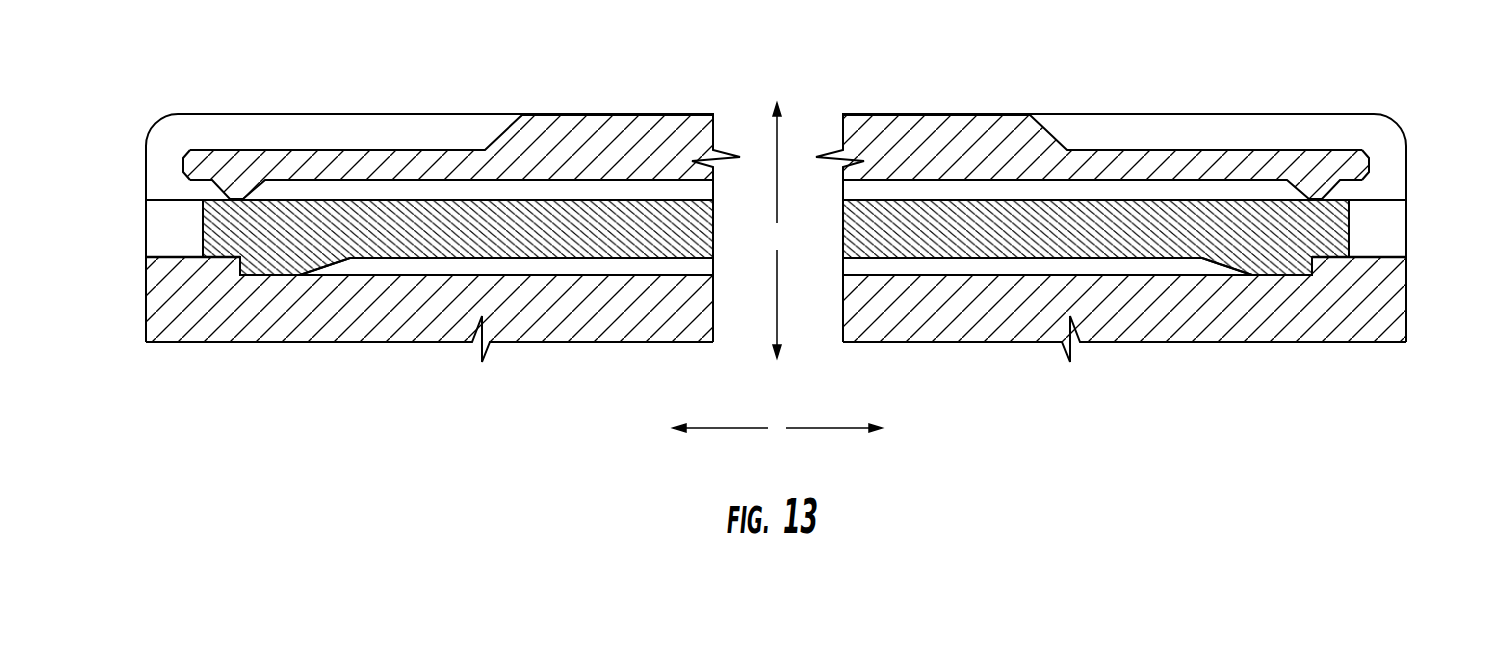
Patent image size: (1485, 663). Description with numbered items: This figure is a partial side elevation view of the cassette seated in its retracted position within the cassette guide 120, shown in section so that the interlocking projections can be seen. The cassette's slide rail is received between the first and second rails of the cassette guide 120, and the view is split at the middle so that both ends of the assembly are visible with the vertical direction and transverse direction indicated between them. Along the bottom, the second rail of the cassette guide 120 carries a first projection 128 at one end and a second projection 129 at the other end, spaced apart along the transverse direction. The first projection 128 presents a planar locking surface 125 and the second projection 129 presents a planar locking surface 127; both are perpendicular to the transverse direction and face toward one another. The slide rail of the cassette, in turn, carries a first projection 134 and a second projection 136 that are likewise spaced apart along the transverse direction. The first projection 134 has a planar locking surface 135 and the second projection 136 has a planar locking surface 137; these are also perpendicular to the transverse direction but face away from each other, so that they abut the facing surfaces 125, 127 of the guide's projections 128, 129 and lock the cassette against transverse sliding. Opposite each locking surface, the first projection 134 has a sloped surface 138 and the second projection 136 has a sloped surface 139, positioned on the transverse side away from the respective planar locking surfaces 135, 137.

The cassette guide 120 is at (860, 115).
The planar locking surface 125 is at (228, 264).
The planar locking surface 127 is at (1327, 263).
The first projection 128 is at (152, 283).
The second projection 129 is at (1400, 274).
The first projection 134 is at (278, 274).
The planar locking surface 135 is at (252, 264).
The second projection 136 is at (1265, 272).
The planar locking surface 137 is at (1301, 263).
The sloped surface 138 is at (338, 273).
The sloped surface 139 is at (1193, 272).